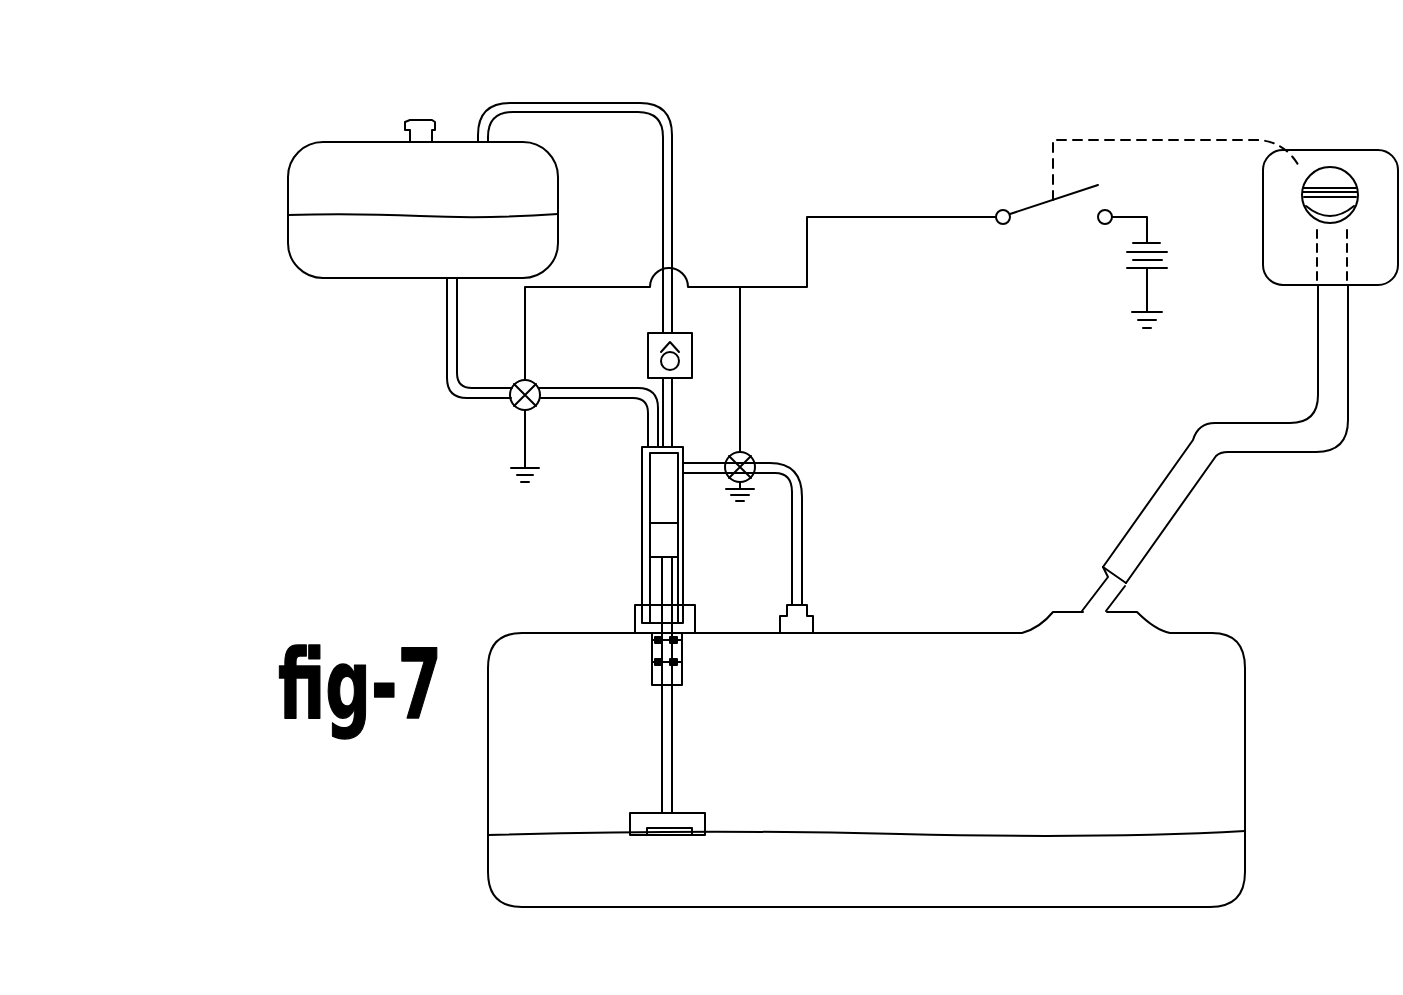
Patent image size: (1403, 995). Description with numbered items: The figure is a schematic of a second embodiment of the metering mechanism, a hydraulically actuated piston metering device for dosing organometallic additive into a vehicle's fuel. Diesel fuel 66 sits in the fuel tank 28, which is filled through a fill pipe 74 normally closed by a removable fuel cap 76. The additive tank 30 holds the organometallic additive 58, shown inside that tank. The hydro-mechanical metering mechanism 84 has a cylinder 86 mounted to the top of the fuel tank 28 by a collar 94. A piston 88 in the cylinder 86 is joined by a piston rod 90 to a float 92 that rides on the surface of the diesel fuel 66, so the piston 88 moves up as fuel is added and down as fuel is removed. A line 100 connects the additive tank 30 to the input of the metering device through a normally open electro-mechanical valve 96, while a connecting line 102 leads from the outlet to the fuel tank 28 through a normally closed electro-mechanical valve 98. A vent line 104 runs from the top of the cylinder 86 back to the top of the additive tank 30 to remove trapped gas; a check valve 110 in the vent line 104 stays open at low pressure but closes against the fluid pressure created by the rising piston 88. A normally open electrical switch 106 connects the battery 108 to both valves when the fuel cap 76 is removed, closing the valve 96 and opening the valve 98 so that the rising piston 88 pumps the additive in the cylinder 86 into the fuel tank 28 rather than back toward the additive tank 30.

The fuel tank 28 is at (1245, 727).
The additive tank 30 is at (350, 140).
The fluid in reservoir 58 is at (432, 254).
The diesel fuel 66 is at (980, 876).
The fill pipe 74 is at (1262, 453).
The fuel cap 76 is at (1320, 175).
The hydro-mechanical metering mechanism 84 is at (696, 534).
The cylinder 86 is at (645, 492).
The piston 88 is at (650, 523).
The piston rod 90 is at (662, 742).
The float 92 is at (643, 812).
The collar 94 is at (635, 622).
The normally open electro-mechanical valve 96 is at (518, 410).
The normally closed electro-mechanical valve 98 is at (749, 452).
The line 100 is at (447, 317).
The connecting line 102 is at (800, 535).
The vent line 104 is at (672, 188).
The normally open electrical switch 106 is at (1035, 208).
The battery 108 is at (1137, 268).
The check valve 110 is at (648, 352).